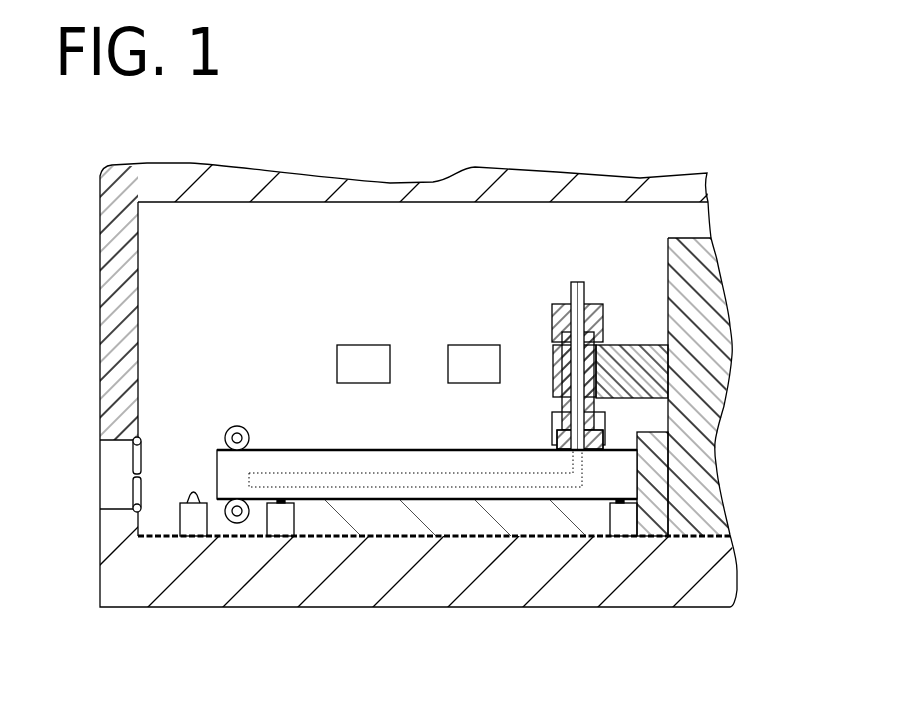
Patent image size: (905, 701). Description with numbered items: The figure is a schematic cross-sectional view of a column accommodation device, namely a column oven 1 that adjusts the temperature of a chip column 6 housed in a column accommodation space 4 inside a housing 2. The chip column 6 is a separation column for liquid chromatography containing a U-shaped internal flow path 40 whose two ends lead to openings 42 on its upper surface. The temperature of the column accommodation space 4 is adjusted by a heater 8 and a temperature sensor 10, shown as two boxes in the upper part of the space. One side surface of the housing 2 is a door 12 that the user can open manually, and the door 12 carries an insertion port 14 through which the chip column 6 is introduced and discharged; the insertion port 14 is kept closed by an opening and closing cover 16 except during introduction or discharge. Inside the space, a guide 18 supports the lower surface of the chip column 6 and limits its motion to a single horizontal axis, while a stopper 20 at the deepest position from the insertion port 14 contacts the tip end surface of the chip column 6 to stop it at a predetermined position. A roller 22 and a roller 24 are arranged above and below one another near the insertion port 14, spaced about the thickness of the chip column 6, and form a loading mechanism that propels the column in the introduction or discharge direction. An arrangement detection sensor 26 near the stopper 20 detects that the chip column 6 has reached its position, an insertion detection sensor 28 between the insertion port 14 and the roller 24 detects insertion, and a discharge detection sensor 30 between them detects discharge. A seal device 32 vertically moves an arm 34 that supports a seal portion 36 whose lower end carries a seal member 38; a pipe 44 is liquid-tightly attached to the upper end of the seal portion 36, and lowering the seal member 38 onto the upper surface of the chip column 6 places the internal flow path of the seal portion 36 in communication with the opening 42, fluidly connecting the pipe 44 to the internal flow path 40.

The column oven 1 is at (682, 140).
The housing 2 is at (513, 183).
The column accommodation space 4 is at (288, 228).
The chip column 6 is at (418, 449).
The heater 8 is at (362, 352).
The temperature sensor 10 is at (472, 358).
The door 12 is at (113, 295).
The insertion port 14 is at (108, 465).
The opening and closing cover 16 is at (133, 491).
The guide 18 is at (458, 522).
The stopper 20 is at (651, 492).
The roller 22 is at (241, 427).
The roller 24 is at (241, 522).
The arrangement detection sensor 26 is at (623, 522).
The insertion detection sensor 28 is at (193, 525).
The discharge detection sensor 30 is at (280, 527).
The seal device 32 is at (706, 307).
The arm 34 is at (647, 372).
The seal portion 36 is at (556, 421).
The seal member 38 is at (557, 436).
The internal flow path 40 is at (373, 480).
The opening 42 is at (578, 450).
The pipe 44 is at (568, 297).